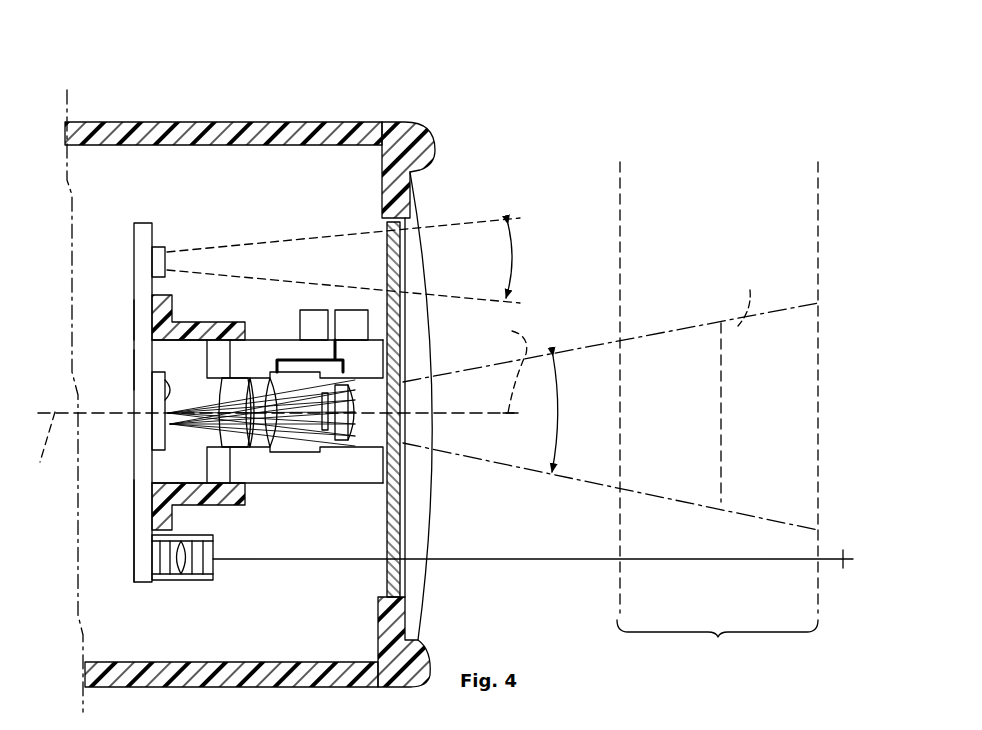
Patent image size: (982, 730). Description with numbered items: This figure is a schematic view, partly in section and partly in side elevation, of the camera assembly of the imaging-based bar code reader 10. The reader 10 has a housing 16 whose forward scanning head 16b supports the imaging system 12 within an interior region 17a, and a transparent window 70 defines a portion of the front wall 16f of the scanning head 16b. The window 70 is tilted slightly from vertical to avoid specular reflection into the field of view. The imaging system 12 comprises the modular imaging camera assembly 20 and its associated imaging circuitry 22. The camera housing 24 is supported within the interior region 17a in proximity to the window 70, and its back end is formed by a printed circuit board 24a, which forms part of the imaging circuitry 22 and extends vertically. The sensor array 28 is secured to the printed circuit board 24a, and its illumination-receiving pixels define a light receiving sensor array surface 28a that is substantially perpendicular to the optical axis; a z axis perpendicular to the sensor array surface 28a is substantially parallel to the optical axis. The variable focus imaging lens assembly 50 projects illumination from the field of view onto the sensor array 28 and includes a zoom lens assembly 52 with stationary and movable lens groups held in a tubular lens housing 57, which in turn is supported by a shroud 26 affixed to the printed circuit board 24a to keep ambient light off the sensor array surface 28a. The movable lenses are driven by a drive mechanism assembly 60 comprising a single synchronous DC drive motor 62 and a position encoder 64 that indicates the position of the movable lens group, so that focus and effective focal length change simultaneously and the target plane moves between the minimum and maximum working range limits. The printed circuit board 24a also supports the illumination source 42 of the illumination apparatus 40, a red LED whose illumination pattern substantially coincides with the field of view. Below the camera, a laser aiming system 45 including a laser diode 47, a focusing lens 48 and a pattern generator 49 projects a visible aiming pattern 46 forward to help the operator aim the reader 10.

The imaging-based bar code reader 10 is at (140, 72).
The imaging system 12 is at (68, 310).
The housing 16 is at (326, 110).
The scanning head portion 16b is at (272, 122).
The front wall 16f is at (433, 147).
The interior region of the scanning head 17a is at (122, 165).
The imaging camera assembly 20 is at (124, 320).
The imaging circuitry 22 is at (128, 371).
The camera housing 24 is at (142, 283).
The printed circuit board 24a is at (143, 490).
The shroud 26 is at (194, 330).
The sensor array 28 is at (152, 436).
The sensor array surface 28a is at (163, 386).
The illumination apparatus 40 is at (196, 216).
The illumination source 42 is at (168, 250).
The laser aiming system 45 is at (163, 618).
The aiming pattern 46 is at (845, 567).
The laser diode 47 is at (157, 570).
The focusing lens 48 is at (183, 560).
The pattern generator 49 is at (208, 562).
The variable focus imaging lens assembly 50 is at (268, 320).
The zoom lens assembly 52 is at (388, 398).
The tubular lens housing 57 is at (282, 468).
The drive mechanism assembly 60 is at (336, 298).
The drive motor 62 is at (308, 310).
The position encoder 64 is at (352, 310).
The transparent window 70 is at (395, 510).